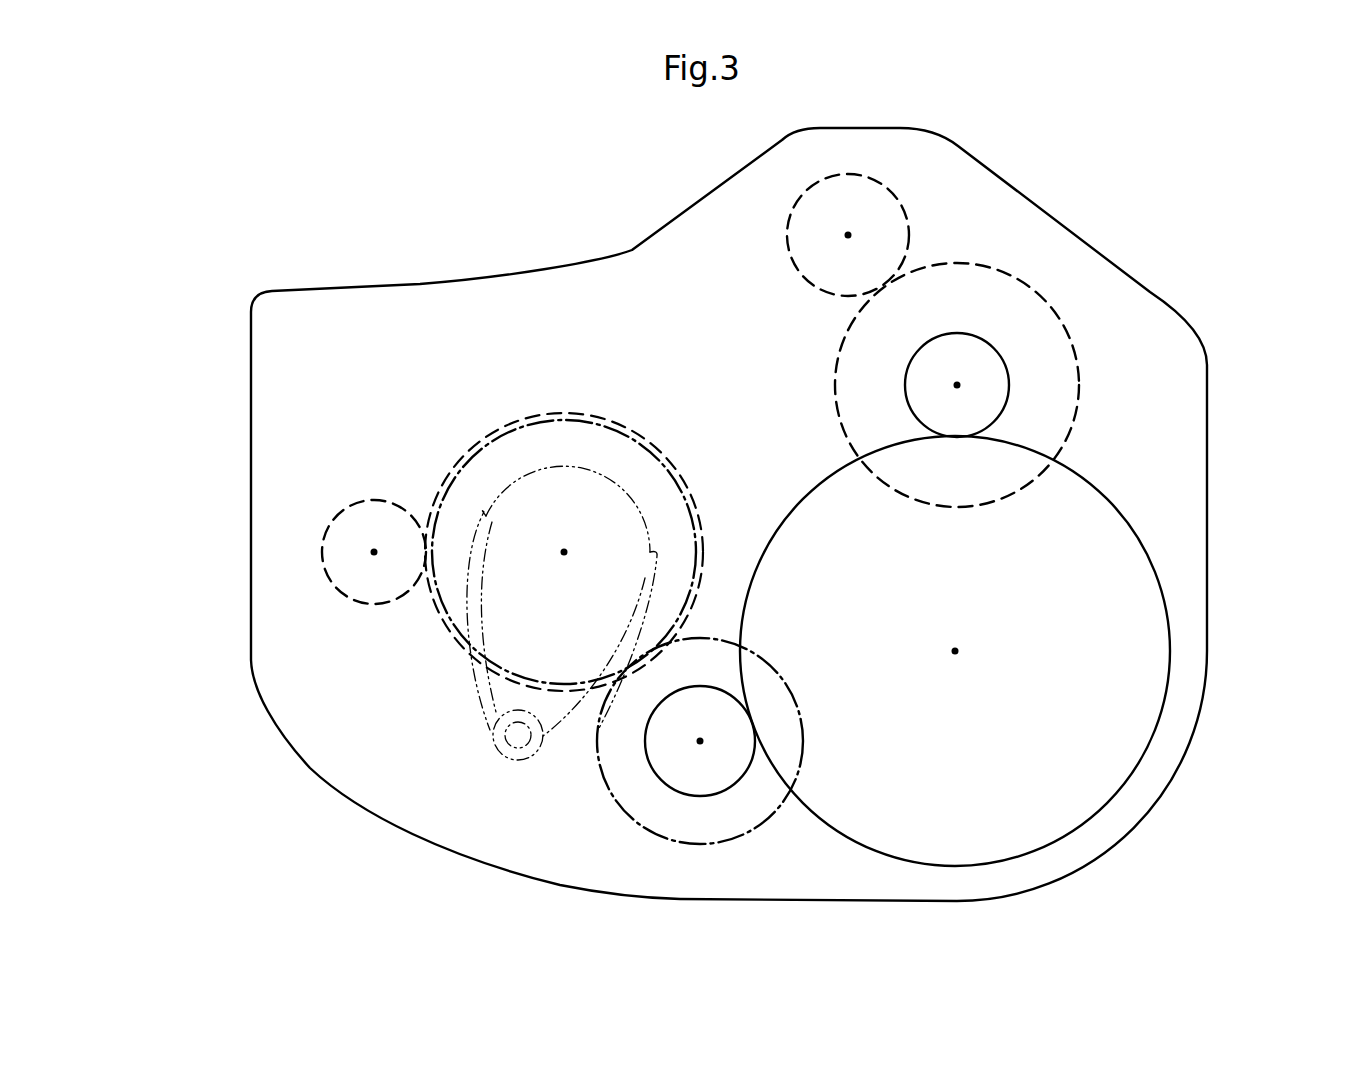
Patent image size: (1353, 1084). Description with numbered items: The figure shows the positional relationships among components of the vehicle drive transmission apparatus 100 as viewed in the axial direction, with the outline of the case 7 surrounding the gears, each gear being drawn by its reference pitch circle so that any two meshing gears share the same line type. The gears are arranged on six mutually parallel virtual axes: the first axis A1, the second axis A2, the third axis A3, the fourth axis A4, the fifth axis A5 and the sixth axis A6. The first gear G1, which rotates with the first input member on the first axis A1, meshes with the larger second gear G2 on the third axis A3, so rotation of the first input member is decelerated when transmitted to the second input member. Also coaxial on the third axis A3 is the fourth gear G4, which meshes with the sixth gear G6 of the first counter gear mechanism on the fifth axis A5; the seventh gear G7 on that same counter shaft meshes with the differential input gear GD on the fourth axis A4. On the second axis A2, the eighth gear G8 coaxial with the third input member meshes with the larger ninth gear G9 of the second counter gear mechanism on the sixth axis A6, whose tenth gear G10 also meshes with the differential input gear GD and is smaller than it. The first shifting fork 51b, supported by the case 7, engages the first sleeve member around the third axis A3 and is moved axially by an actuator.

The vehicle drive transmission apparatus 100 is at (256, 99).
The case 7 is at (422, 283).
The first gear G1 is at (373, 603).
The second gear G2 is at (617, 415).
The fourth gear G4 is at (645, 455).
The sixth gear G6 is at (607, 790).
The seventh gear G7 is at (728, 795).
The eighth gear G8 is at (878, 177).
The ninth gear G9 is at (1007, 270).
The tenth gear G10 is at (1005, 358).
The differential input gear GD is at (1143, 530).
The first axis A1 is at (373, 548).
The second axis A2 is at (846, 235).
The third axis A3 is at (562, 550).
The fourth axis A4 is at (955, 651).
The fifth axis A5 is at (700, 745).
The sixth axis A6 is at (955, 385).
The first shifting fork 51b is at (483, 692).